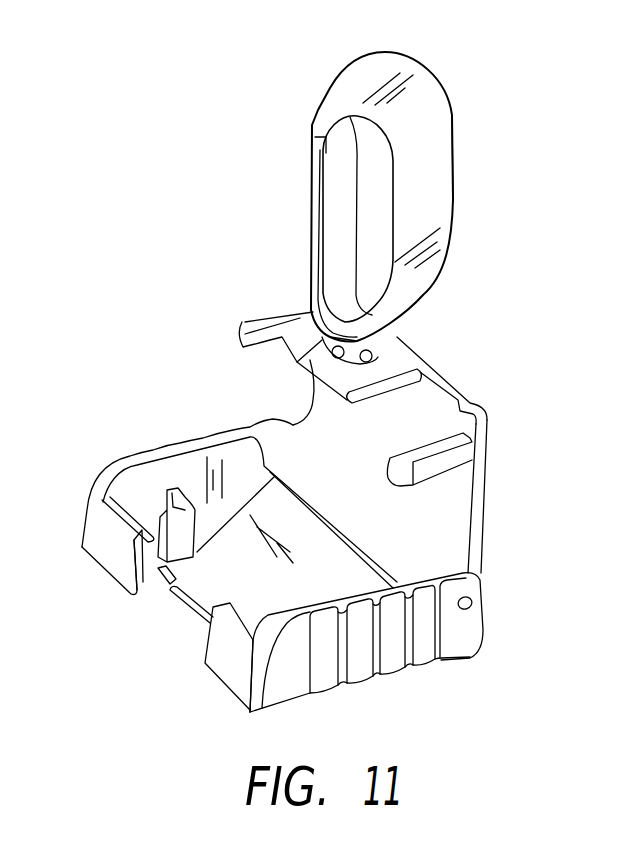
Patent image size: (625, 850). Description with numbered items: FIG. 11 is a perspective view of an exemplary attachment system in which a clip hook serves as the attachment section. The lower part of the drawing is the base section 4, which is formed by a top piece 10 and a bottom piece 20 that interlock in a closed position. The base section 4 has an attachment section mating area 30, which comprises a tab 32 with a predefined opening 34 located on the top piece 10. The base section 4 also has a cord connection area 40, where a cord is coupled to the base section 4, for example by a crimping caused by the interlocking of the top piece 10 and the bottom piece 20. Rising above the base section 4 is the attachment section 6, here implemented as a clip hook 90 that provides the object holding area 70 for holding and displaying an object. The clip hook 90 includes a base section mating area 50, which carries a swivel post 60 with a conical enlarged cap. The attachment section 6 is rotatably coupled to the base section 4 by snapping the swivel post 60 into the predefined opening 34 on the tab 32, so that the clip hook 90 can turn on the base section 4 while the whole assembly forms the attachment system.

The base section 4 is at (252, 600).
The attachment section 6 is at (430, 217).
The top piece 10 is at (447, 511).
The bottom piece 20 is at (221, 568).
The attachment section mating area 30 is at (408, 393).
The tab 32 is at (300, 360).
The predefined opening 34 is at (292, 330).
The cord connection area 40 is at (453, 633).
The base section mating area 50 is at (375, 334).
The swivel post 60 is at (395, 343).
The object holding area 70 is at (377, 178).
The clip hook 90 is at (422, 162).